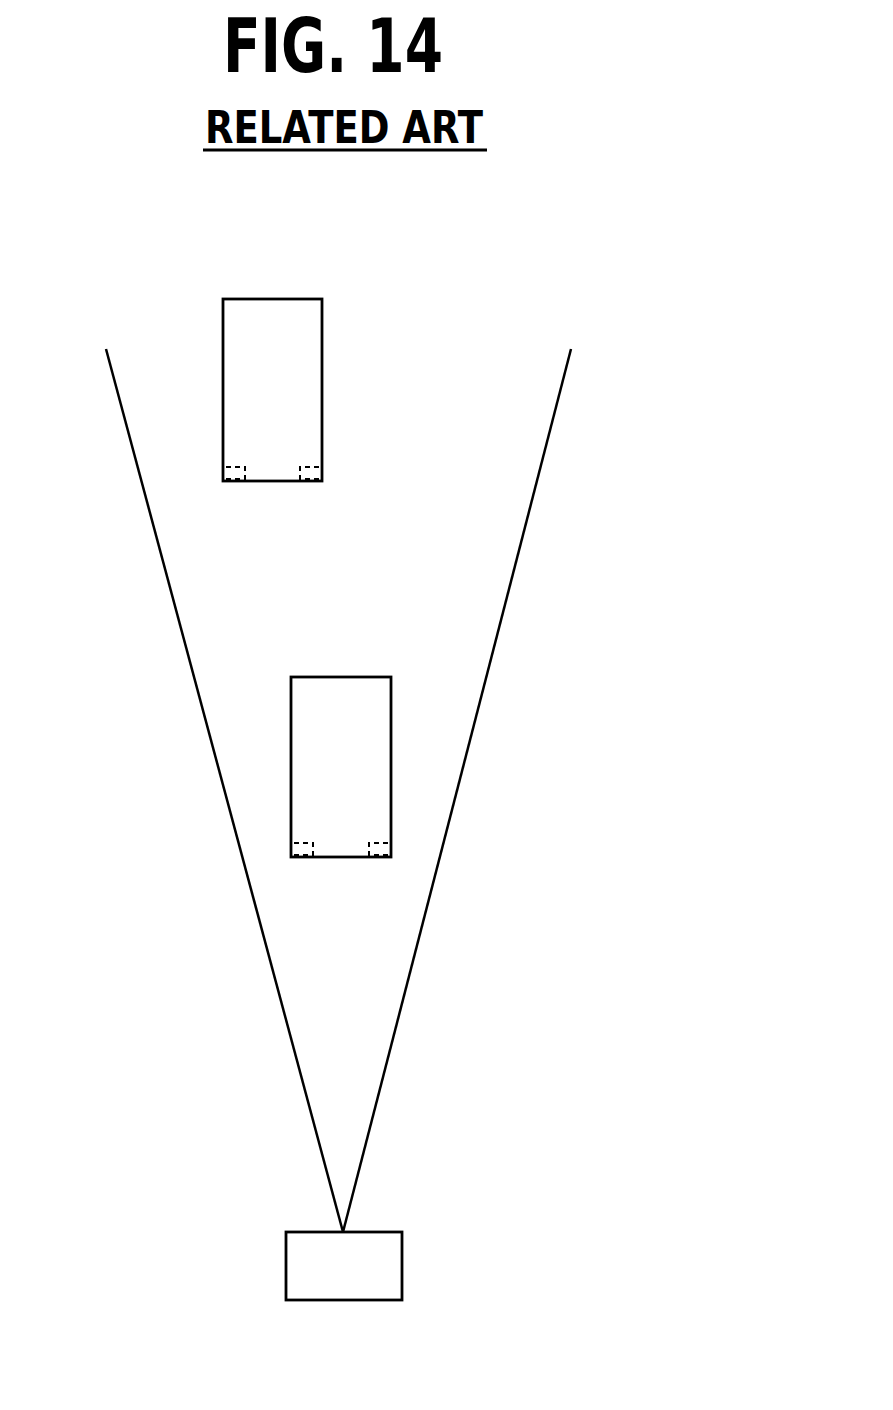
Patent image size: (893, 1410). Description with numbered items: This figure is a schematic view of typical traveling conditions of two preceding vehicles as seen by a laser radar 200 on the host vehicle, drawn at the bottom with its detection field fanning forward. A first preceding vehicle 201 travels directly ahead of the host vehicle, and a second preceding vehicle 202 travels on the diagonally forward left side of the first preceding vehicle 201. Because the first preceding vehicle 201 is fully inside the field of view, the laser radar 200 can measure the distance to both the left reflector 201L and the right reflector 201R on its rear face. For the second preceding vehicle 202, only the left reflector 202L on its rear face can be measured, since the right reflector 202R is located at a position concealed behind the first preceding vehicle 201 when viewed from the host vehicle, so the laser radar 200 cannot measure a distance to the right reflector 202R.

The laser radar 200 is at (402, 1264).
The first preceding vehicle 201 is at (391, 722).
The left reflector 201L is at (291, 850).
The right reflector 201R is at (391, 842).
The second preceding vehicle 202 is at (322, 398).
The left reflector 202L is at (223, 472).
The right reflector 202R is at (322, 467).